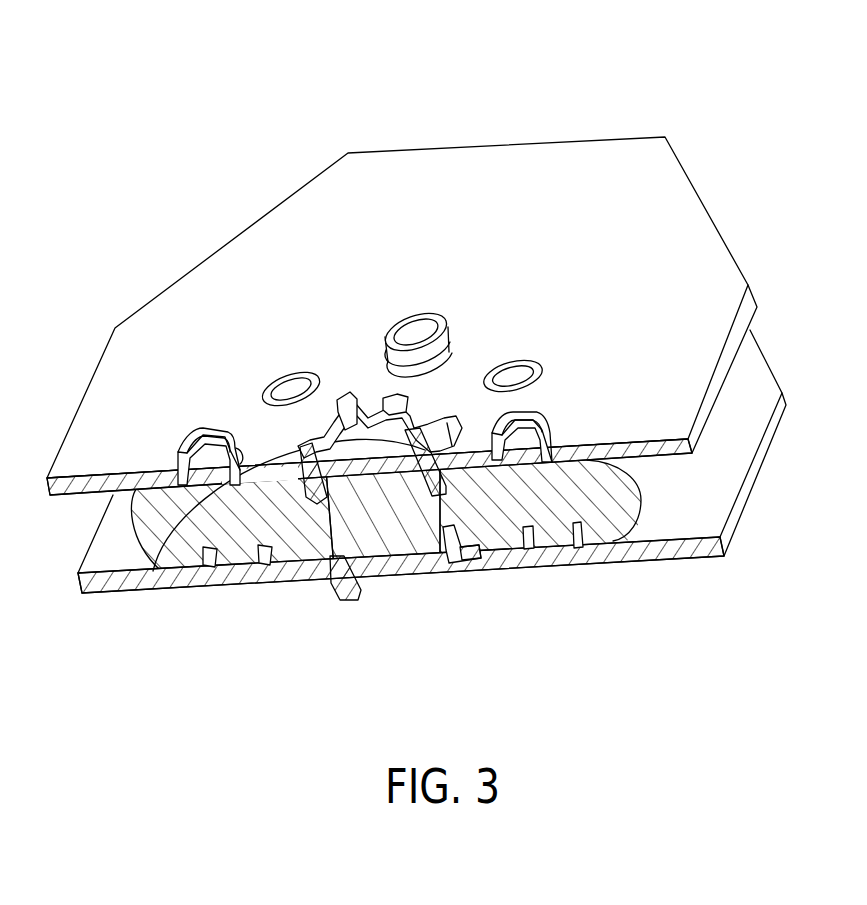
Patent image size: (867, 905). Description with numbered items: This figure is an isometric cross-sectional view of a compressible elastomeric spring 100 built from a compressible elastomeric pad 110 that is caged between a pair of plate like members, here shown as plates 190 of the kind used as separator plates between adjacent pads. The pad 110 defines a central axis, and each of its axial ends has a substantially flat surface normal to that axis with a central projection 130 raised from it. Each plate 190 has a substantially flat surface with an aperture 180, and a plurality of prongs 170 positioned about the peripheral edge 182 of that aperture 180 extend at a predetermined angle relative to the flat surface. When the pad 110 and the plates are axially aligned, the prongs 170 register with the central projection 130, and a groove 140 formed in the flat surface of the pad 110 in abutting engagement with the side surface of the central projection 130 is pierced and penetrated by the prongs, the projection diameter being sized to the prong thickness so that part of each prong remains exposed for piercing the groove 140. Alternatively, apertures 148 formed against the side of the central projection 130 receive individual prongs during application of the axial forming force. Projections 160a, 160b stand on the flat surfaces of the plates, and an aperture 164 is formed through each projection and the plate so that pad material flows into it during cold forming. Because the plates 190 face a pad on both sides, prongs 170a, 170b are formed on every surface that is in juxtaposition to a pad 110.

The compressible elastomeric spring 100 is at (586, 112).
The compressible elastomeric pad 110 is at (383, 592).
The central projection 130 is at (382, 420).
The groove 140 is at (528, 557).
The aperture 148 is at (288, 566).
The projection 160a is at (262, 383).
The projection 160b is at (440, 317).
The aperture 164 is at (520, 372).
The prong 170 is at (356, 662).
The prong 170a is at (226, 570).
The prong 170b is at (347, 392).
The aperture 180 is at (185, 560).
The peripheral edge 182 is at (398, 408).
The separator plate 190 is at (688, 212).